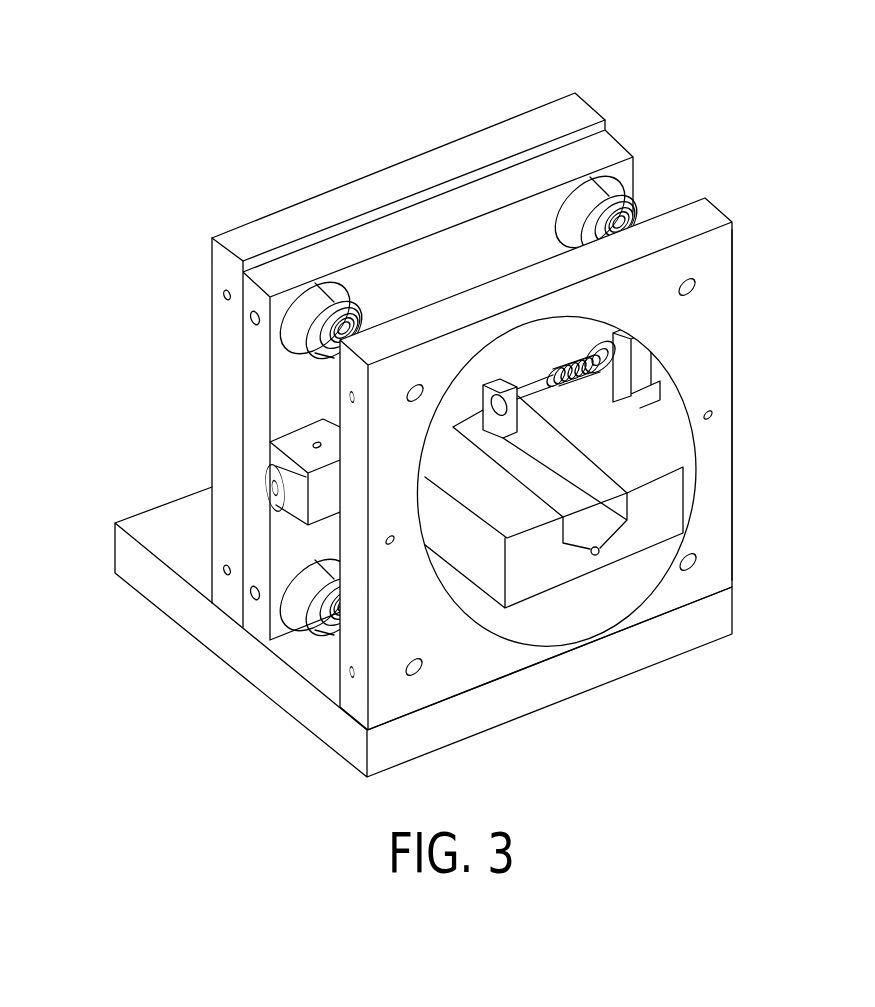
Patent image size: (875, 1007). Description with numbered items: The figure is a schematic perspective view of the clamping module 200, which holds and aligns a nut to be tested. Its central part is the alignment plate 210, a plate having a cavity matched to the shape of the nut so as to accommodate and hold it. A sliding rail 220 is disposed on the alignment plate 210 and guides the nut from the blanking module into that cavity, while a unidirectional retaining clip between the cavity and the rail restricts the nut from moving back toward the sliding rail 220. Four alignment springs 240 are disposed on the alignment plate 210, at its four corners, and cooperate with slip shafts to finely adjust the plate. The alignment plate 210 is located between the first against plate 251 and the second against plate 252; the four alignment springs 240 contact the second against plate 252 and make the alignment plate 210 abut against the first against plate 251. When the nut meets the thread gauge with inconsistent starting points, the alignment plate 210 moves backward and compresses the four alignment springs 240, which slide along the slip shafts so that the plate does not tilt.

The clamping module 200 is at (240, 178).
The alignment plate 210 is at (612, 147).
The sliding rail 220 is at (673, 518).
The alignment springs 240 is at (641, 193).
The first against plate 251 is at (575, 92).
The second against plate 252 is at (713, 277).